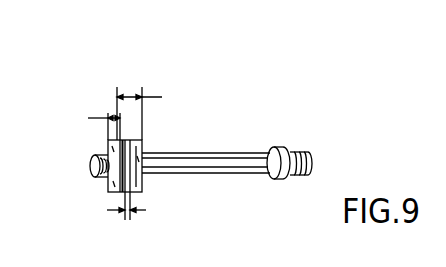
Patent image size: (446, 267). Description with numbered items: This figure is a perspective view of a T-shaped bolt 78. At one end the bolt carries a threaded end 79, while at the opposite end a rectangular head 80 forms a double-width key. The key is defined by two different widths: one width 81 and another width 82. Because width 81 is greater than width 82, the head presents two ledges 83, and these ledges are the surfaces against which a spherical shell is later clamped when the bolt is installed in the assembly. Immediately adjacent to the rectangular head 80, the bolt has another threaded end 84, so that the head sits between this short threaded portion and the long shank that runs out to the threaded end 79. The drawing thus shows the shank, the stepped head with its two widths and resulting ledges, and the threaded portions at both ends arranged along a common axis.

The T-shaped bolt 78 is at (218, 153).
The threaded end 79 is at (310, 151).
The rectangular head 80 is at (143, 141).
The width 81 is at (162, 97).
The width 82 is at (88, 118).
The ledges 83 is at (143, 213).
The threaded end 84 is at (91, 156).